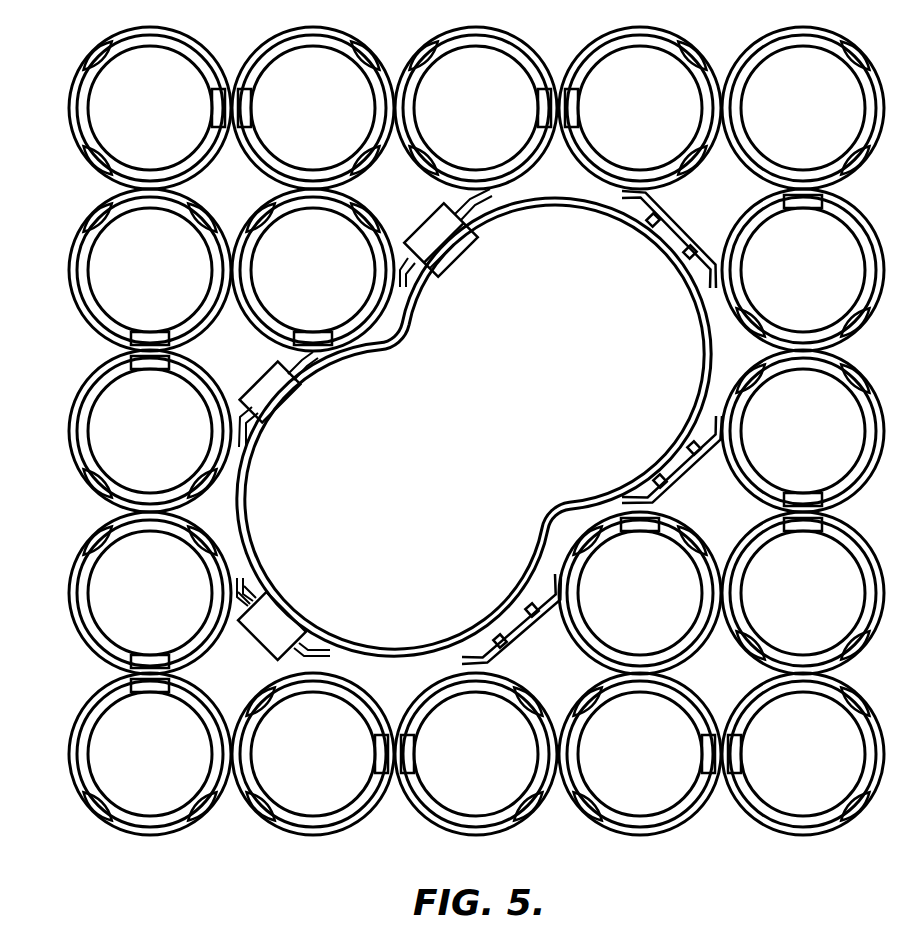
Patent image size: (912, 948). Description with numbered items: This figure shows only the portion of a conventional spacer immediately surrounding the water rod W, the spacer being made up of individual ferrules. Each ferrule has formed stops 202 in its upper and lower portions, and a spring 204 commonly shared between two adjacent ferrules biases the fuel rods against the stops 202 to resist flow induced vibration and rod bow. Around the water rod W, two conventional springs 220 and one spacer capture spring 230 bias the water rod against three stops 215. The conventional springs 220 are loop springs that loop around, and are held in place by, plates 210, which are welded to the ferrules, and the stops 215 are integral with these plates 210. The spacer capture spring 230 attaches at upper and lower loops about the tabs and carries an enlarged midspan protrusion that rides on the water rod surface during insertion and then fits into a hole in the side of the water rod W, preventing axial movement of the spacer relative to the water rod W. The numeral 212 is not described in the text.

The formed stops 202 is at (243, 480).
The spring 204 is at (117, 643).
The plates 210 is at (317, 376).
The clamp body 212 is at (437, 203).
The stops 215 is at (662, 254).
The conventional springs 220 is at (476, 226).
The spacer capture spring 230 is at (452, 263).
The water rod W is at (608, 222).